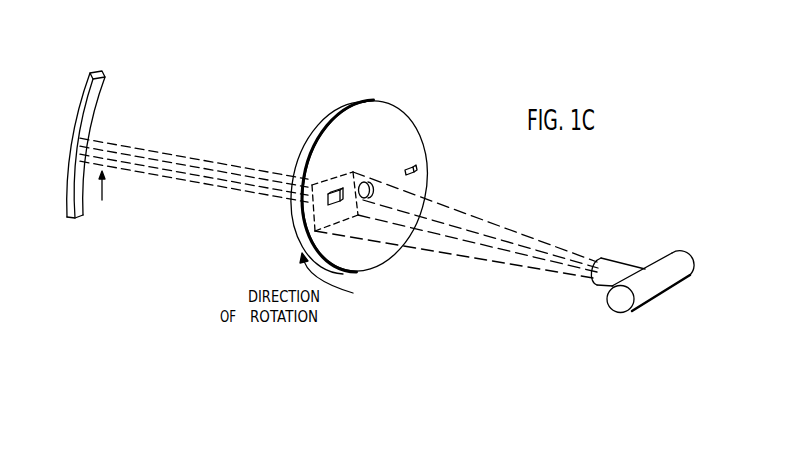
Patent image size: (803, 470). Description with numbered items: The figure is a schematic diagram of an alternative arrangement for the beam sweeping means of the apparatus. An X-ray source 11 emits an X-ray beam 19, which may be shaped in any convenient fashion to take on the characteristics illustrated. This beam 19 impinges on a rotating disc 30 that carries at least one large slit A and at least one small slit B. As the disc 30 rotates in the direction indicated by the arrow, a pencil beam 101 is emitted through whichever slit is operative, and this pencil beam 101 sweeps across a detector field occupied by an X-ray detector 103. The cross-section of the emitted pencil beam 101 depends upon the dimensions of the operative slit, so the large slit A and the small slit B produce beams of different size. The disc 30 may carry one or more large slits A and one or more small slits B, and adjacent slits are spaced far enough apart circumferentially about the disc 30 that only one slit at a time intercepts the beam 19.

The X-ray source 11 is at (620, 266).
The X-ray beam 19 is at (431, 247).
The rotating disc 30 is at (372, 108).
The large slit A is at (333, 188).
The small slit B is at (409, 164).
The pencil beam 101 is at (225, 167).
The X-ray detector 103 is at (102, 93).